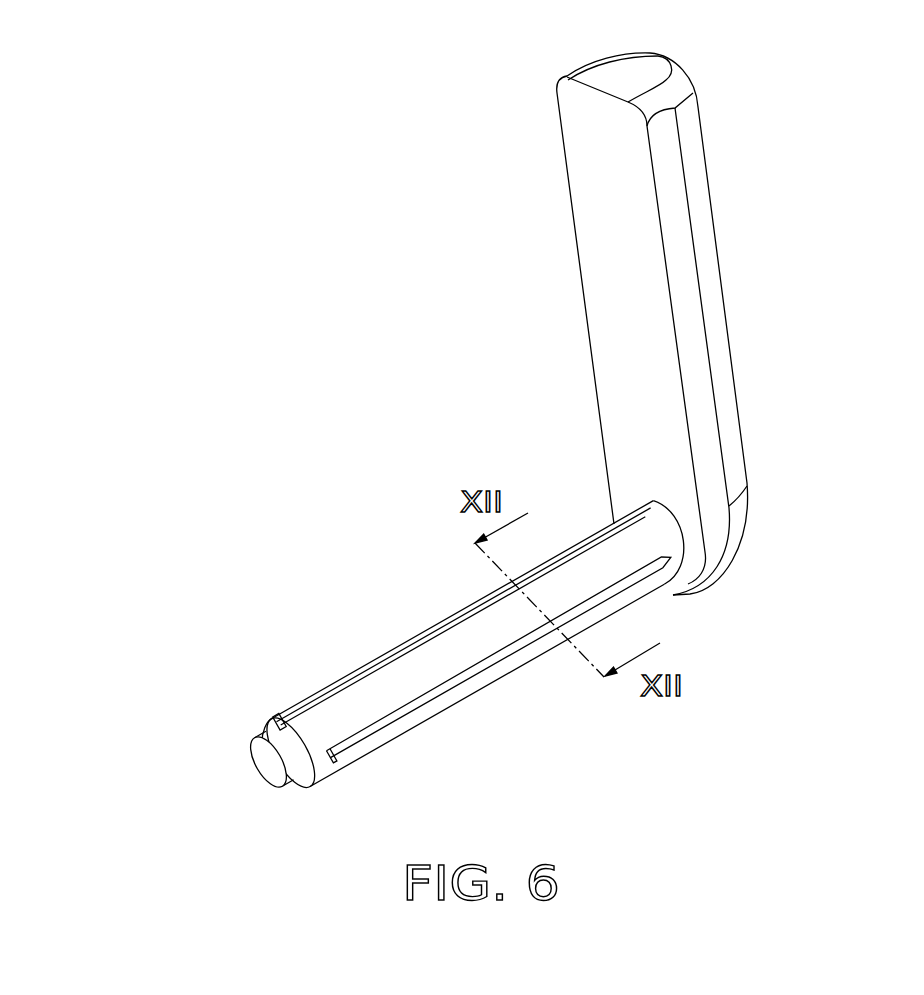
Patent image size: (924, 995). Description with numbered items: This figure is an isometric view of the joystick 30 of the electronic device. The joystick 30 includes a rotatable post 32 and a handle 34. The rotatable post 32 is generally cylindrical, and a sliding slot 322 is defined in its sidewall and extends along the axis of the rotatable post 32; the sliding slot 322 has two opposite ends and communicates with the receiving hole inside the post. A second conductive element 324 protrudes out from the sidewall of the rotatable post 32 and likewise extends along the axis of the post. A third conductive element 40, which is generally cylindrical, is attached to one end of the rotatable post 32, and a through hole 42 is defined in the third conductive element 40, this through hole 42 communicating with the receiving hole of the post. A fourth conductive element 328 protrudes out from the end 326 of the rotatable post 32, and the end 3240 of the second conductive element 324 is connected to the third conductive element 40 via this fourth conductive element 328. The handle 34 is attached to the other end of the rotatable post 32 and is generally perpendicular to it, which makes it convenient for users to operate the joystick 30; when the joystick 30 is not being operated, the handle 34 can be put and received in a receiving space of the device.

The joystick 30 is at (519, 450).
The rotatable post 32 is at (488, 674).
The handle 34 is at (657, 412).
The sliding slot 322 is at (407, 716).
The second conductive element 324 is at (391, 655).
The end of the second conductive element 3240 is at (276, 718).
The end of the rotatable post 326 is at (303, 782).
The fourth conductive element 328 is at (262, 729).
The third conductive element 40 is at (216, 789).
The through hole 42 is at (262, 758).